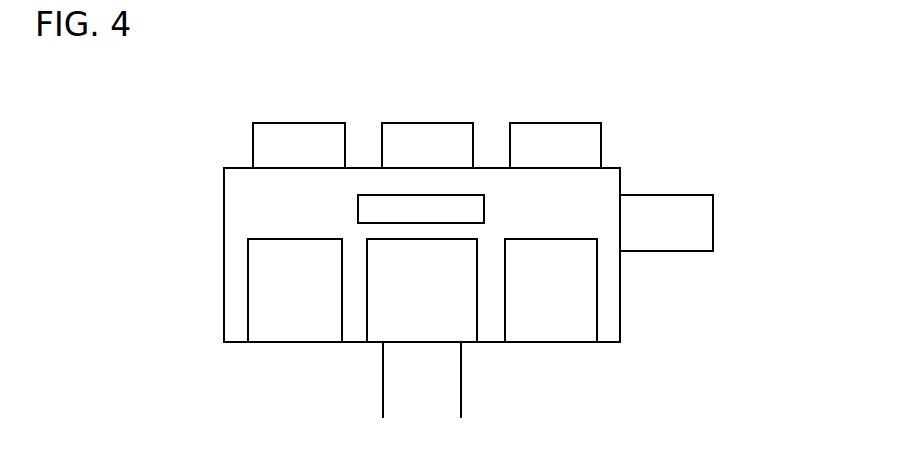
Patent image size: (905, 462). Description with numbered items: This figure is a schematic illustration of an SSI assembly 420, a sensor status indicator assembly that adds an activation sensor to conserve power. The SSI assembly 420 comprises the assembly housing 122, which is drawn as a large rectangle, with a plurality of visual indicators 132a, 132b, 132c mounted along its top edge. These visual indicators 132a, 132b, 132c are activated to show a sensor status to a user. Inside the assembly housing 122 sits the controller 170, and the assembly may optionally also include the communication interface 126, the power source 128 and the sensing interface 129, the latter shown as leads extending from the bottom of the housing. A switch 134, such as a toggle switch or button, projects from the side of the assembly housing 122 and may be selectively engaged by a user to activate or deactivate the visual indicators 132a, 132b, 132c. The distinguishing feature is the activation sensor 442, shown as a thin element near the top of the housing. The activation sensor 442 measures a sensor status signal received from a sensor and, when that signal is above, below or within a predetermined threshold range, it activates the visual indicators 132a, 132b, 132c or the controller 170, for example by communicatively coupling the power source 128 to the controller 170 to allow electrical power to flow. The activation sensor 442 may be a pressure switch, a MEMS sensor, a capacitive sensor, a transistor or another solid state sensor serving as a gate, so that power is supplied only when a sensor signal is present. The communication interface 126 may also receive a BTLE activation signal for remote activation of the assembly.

The SSI assembly 420 is at (668, 99).
The assembly housing 122 is at (224, 252).
The visual indicator 132a is at (299, 132).
The visual indicator 132b is at (414, 135).
The visual indicator 132c is at (542, 134).
The activation sensor 442 is at (377, 209).
The switch 134 is at (713, 220).
The controller 170 is at (292, 338).
The communication interface 126 is at (428, 338).
The power source 128 is at (562, 338).
The sensing interface 129 is at (383, 378).